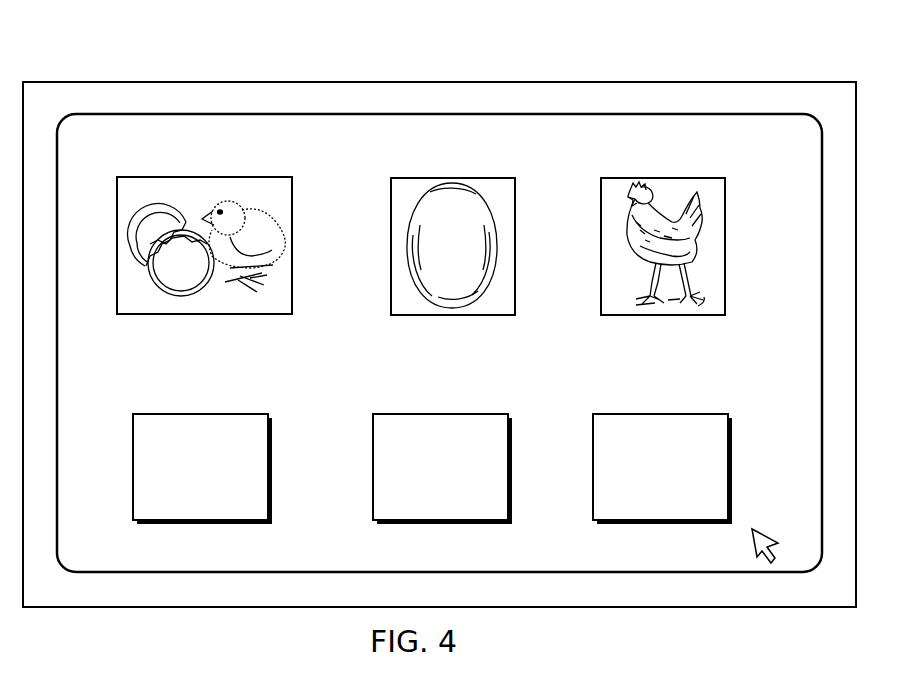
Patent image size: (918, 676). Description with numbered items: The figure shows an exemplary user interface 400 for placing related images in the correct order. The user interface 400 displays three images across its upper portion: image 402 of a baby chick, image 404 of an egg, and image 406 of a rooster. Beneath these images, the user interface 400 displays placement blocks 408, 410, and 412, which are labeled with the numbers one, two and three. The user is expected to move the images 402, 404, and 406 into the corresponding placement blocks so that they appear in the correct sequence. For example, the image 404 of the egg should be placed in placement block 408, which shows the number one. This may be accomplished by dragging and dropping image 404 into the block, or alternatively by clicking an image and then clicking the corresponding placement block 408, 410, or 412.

The user interface 400 is at (128, 82).
The image 402 is at (192, 177).
The image 404 is at (442, 178).
The image 406 is at (656, 178).
The placement block 408 is at (172, 414).
The placement block 410 is at (442, 414).
The placement block 412 is at (676, 414).